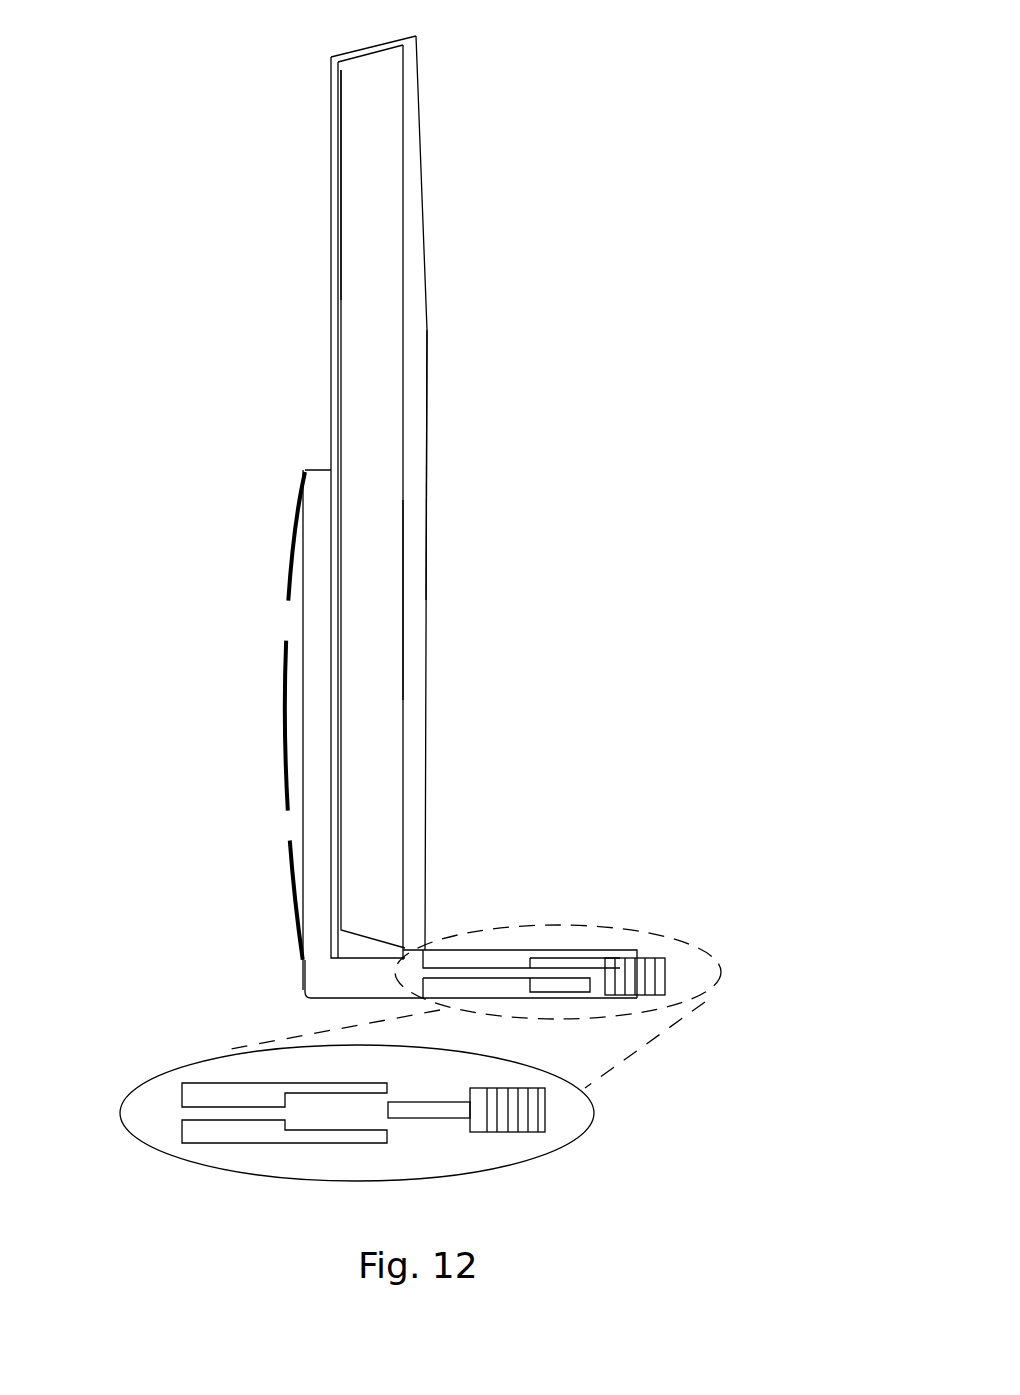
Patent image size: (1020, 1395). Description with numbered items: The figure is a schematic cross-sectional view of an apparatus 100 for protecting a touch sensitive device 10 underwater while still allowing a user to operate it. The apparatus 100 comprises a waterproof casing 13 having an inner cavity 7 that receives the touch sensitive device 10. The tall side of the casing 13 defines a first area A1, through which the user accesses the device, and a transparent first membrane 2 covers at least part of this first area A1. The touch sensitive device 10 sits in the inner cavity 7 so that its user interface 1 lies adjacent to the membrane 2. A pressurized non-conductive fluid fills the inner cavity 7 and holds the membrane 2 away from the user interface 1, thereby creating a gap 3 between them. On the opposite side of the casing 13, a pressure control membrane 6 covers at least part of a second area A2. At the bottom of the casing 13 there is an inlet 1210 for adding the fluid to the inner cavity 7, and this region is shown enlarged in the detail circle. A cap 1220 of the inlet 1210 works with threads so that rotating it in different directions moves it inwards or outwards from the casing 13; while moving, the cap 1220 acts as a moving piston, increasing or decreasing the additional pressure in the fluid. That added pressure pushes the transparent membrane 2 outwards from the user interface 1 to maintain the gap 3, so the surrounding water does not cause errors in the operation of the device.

The apparatus 100 is at (140, 105).
The waterproof casing 13 is at (331, 60).
The touch sensitive device 10 is at (360, 238).
The user interface 1 is at (405, 327).
The transparent first membrane 2 is at (428, 487).
The gap 3 is at (417, 590).
The pressure control membrane 6 is at (303, 622).
The inner cavity 7 is at (315, 958).
The inlet 1210 is at (683, 943).
The cap 1220 is at (547, 1133).
The first area A1 is at (640, 48).
The second area A2 is at (190, 470).